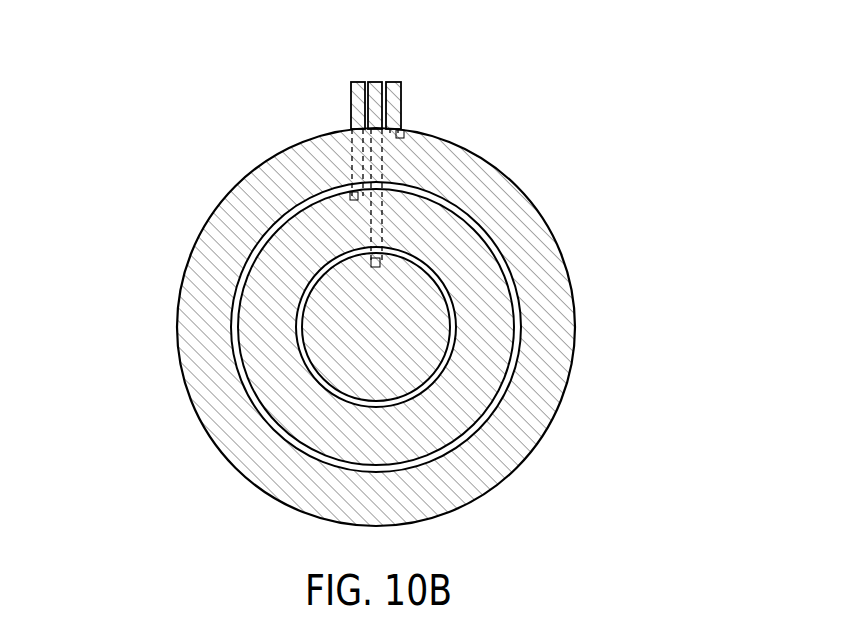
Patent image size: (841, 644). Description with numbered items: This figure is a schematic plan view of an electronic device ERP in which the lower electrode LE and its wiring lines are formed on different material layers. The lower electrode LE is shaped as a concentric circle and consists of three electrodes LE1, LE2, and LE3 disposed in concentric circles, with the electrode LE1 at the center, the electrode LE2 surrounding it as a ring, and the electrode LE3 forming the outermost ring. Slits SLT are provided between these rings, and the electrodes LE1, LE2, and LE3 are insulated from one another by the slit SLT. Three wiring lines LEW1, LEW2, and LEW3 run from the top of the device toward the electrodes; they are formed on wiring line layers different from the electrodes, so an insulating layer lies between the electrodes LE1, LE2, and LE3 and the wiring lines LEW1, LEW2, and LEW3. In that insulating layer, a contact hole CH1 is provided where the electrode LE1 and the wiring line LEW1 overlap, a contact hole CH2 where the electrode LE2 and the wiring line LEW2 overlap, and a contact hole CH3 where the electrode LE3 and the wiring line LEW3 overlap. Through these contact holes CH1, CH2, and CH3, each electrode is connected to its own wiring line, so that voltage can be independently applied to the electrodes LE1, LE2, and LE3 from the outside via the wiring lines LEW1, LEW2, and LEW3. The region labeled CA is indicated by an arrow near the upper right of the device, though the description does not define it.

The wiring line LEW1 is at (376, 82).
The wiring line LEW2 is at (351, 105).
The wiring line LEW3 is at (398, 100).
The contact hole CH1 is at (385, 260).
The contact hole CH2 is at (350, 195).
The contact hole CH3 is at (405, 133).
The cell area CA is at (545, 156).
The electronic device ERP is at (656, 174).
The lower electrode LE is at (704, 209).
The slit SLT is at (517, 286).
The electrode LE1 is at (410, 375).
The electrode LE2 is at (481, 330).
The electrode LE3 is at (493, 472).